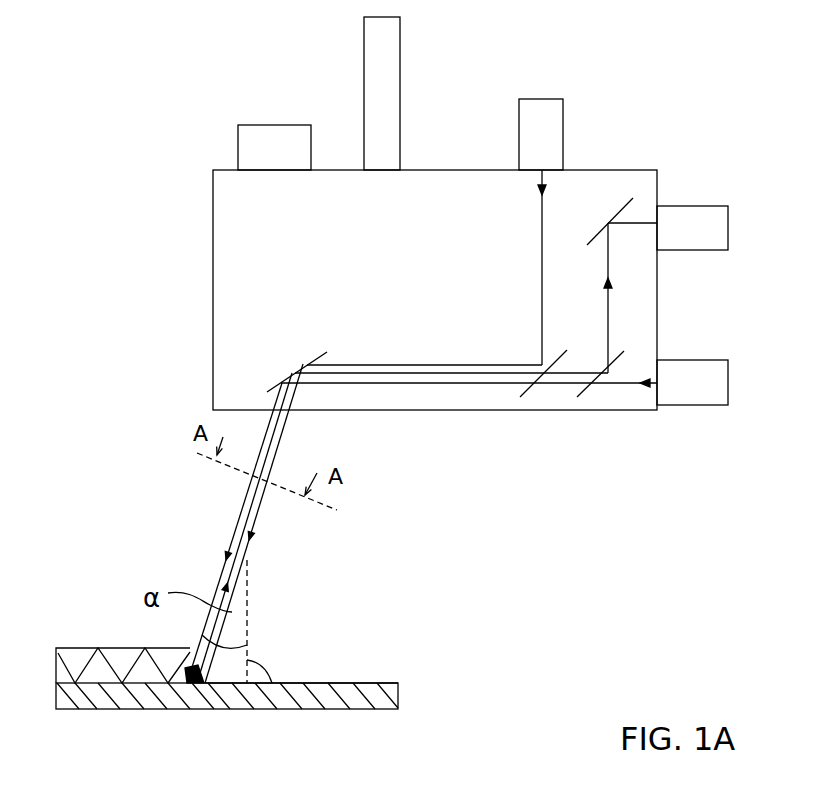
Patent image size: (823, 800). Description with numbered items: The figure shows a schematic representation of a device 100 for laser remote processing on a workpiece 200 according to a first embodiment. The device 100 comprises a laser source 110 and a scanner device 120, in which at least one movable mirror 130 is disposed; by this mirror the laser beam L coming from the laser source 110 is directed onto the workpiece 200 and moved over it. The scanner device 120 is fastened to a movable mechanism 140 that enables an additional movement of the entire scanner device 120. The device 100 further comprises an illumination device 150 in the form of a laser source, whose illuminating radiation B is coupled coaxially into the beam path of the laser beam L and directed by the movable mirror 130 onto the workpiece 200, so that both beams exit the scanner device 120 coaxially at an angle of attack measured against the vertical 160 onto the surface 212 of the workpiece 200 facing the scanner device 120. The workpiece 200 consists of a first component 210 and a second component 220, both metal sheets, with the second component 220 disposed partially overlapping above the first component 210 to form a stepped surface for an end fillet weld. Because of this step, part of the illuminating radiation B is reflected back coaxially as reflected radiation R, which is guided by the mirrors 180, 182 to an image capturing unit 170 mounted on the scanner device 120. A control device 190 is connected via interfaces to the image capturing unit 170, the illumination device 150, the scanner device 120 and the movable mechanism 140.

The device 100 is at (190, 75).
The laser source 110 is at (533, 123).
The scanner device 120 is at (213, 227).
The movable mirror 130 is at (270, 387).
The movable mechanism 140 is at (377, 88).
The illumination device 150 is at (700, 385).
The vertical 160 is at (247, 575).
The image capturing unit 170 is at (700, 222).
The mirror 180 is at (612, 212).
The mirror 182 is at (580, 397).
The control device 190 is at (253, 150).
The workpiece 200 is at (490, 614).
The first component 210 is at (400, 698).
The surface 212 is at (332, 683).
The second component 220 is at (85, 660).
The laser beam L is at (542, 218).
The reflected radiation R is at (610, 313).
The illuminating radiation B is at (613, 383).